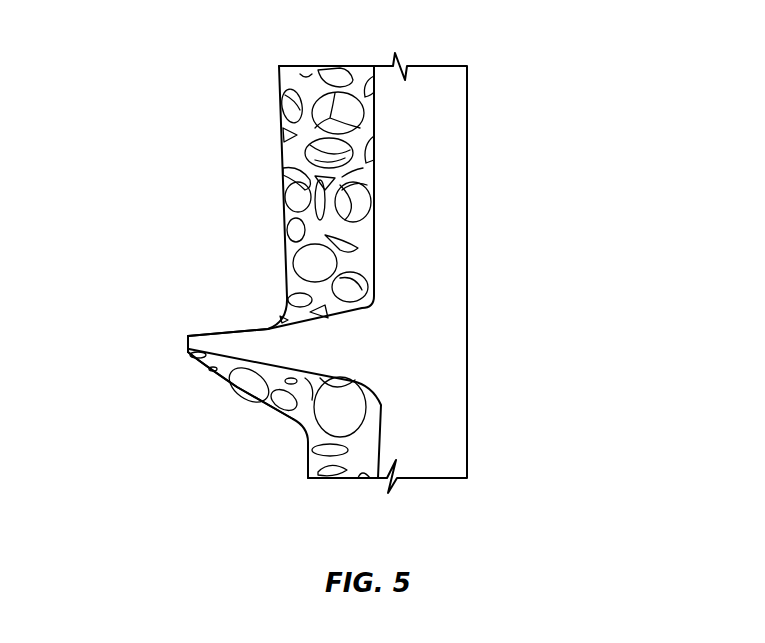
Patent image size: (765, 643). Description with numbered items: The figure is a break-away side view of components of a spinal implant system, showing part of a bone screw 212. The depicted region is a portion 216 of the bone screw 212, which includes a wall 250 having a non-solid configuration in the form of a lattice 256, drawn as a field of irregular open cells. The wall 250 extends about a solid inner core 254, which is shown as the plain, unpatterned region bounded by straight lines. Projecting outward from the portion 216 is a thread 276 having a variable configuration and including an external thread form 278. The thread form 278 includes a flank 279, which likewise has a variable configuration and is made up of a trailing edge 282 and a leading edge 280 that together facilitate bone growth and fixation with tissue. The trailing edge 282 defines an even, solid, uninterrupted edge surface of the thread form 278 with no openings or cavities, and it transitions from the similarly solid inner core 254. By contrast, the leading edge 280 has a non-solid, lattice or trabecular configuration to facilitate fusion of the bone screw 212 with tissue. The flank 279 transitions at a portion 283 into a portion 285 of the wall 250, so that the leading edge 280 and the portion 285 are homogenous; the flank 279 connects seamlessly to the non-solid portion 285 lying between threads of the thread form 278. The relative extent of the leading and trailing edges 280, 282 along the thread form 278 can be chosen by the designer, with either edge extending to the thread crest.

The bone screw 212 is at (590, 128).
The portion 216 is at (192, 41).
The wall 250 is at (307, 140).
The solid inner core 254 is at (448, 192).
The lattice 256 is at (288, 100).
The thread 276 is at (147, 343).
The external thread form 278 is at (215, 377).
The flank 279 is at (239, 343).
The leading edge 280 is at (253, 382).
The trailing edge 282 is at (217, 345).
The portion 283 is at (280, 435).
The portion 285 is at (348, 472).